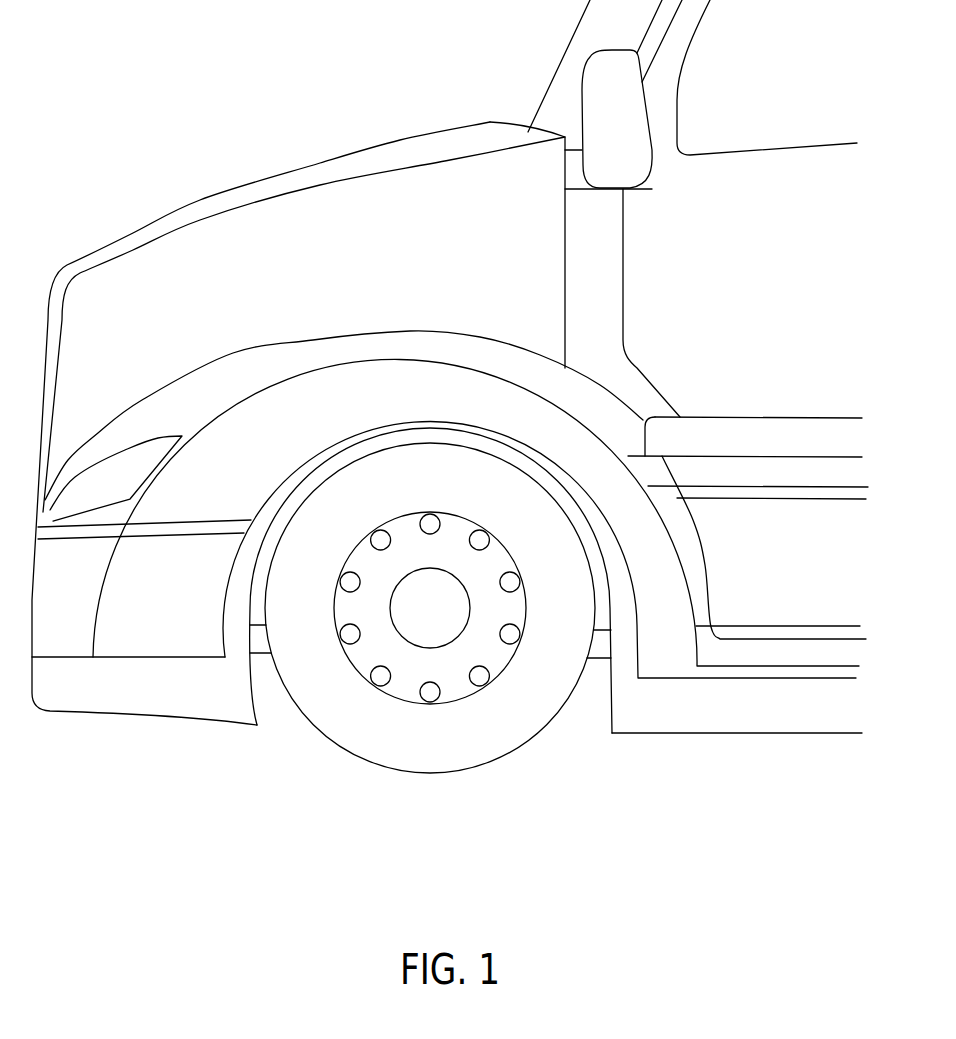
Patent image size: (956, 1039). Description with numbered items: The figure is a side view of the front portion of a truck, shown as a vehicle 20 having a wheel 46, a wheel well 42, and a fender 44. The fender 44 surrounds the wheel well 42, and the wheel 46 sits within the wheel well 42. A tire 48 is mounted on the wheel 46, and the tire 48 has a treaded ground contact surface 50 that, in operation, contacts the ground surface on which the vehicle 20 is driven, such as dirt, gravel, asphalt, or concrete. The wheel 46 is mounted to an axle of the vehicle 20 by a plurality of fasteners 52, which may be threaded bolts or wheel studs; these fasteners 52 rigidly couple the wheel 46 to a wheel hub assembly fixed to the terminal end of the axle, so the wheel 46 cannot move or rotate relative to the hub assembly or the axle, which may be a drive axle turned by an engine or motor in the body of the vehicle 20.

The vehicle 20 is at (450, 419).
The wheel well 42 is at (262, 591).
The fender 44 is at (368, 383).
The wheel 46 is at (398, 611).
The tire 48 is at (545, 693).
The ground contact surface 50 is at (429, 624).
The fasteners 52 is at (427, 522).